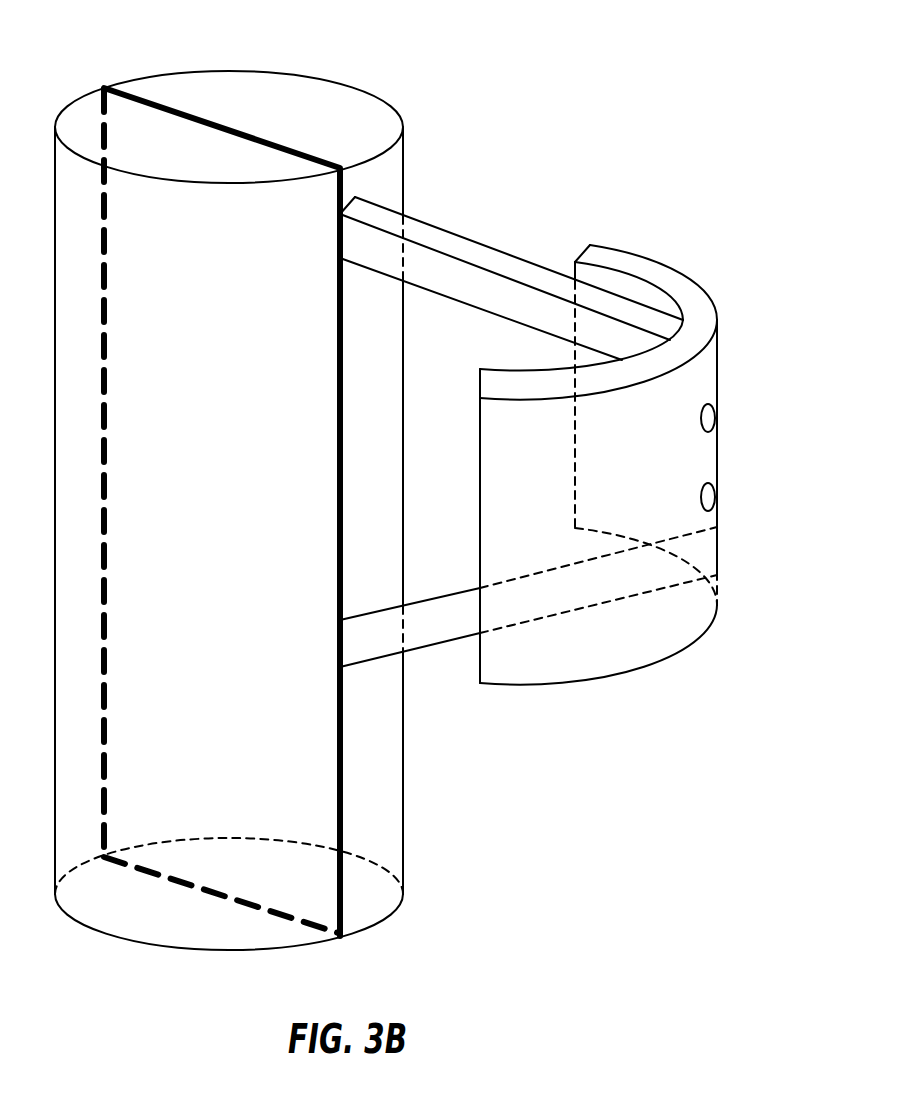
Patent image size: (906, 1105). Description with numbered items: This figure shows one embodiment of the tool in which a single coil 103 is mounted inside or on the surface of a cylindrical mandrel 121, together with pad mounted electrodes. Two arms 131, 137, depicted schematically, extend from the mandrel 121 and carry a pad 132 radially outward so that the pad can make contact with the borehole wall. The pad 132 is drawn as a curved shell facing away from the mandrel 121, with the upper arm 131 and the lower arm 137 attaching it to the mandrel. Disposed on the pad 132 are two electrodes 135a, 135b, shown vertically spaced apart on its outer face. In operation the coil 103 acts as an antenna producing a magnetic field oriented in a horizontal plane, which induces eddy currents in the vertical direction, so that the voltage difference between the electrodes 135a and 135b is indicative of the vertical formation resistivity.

The coil 103 is at (307, 90).
The mandrel 121 is at (104, 84).
The arm 131 is at (468, 240).
The arm 137 is at (426, 650).
The pad 132 is at (687, 287).
The electrode 135a is at (714, 416).
The electrode 135b is at (714, 496).